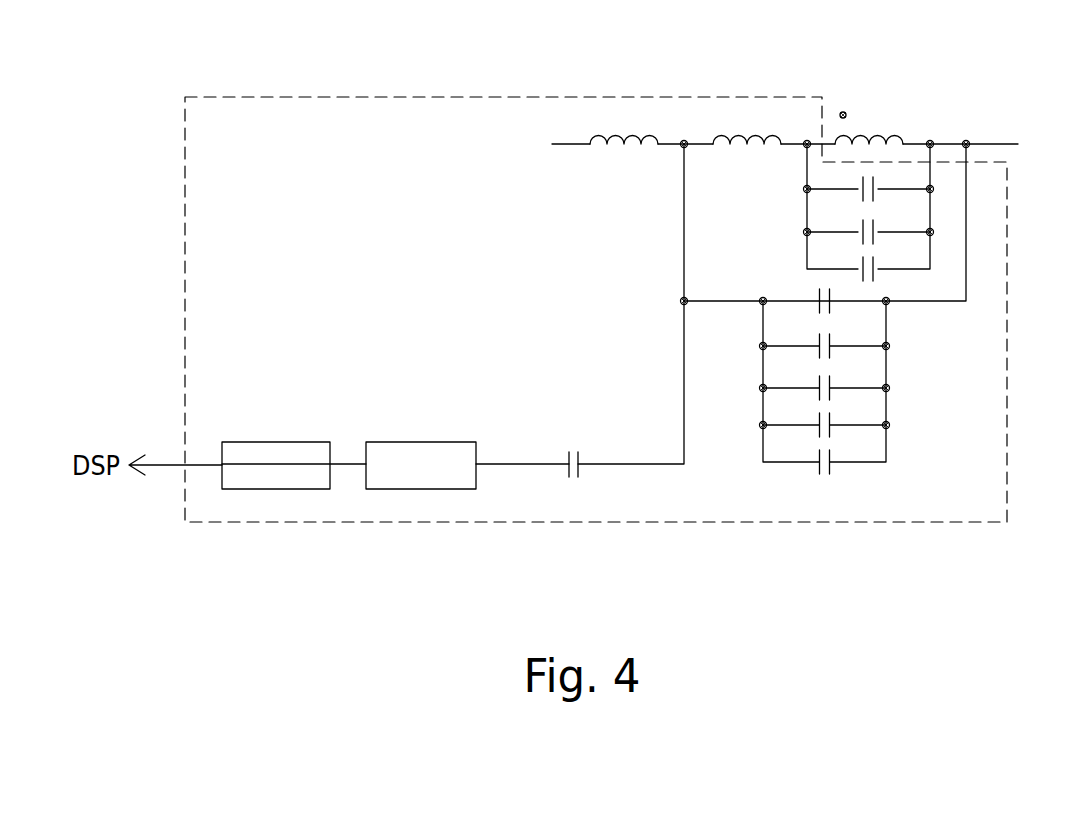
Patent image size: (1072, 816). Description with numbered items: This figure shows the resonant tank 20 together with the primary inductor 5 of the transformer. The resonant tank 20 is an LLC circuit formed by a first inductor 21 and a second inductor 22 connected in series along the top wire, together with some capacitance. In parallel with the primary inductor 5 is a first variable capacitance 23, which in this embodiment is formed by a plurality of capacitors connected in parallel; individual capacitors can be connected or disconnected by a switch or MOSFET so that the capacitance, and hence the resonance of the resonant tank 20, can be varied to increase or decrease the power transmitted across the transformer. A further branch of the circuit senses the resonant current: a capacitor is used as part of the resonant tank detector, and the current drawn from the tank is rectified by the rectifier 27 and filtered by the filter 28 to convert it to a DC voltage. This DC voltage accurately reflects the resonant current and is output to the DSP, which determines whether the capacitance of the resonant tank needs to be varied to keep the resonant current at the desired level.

The resonant tank 20 is at (413, 97).
The first inductor 21 is at (738, 128).
The second inductor 22 is at (612, 128).
The primary inductor 5 is at (900, 128).
The first variable capacitance 23 is at (917, 210).
The rectifier 27 is at (406, 489).
The filter 28 is at (277, 489).